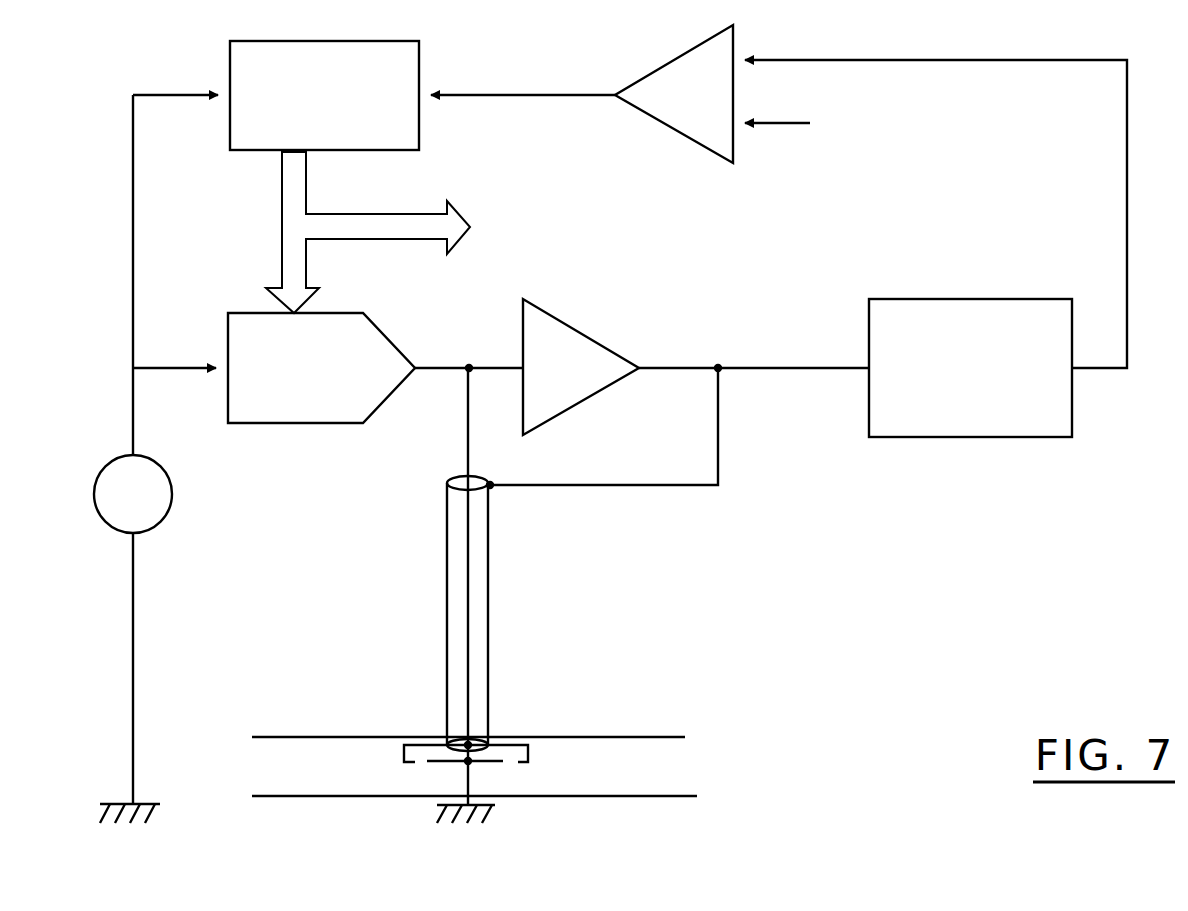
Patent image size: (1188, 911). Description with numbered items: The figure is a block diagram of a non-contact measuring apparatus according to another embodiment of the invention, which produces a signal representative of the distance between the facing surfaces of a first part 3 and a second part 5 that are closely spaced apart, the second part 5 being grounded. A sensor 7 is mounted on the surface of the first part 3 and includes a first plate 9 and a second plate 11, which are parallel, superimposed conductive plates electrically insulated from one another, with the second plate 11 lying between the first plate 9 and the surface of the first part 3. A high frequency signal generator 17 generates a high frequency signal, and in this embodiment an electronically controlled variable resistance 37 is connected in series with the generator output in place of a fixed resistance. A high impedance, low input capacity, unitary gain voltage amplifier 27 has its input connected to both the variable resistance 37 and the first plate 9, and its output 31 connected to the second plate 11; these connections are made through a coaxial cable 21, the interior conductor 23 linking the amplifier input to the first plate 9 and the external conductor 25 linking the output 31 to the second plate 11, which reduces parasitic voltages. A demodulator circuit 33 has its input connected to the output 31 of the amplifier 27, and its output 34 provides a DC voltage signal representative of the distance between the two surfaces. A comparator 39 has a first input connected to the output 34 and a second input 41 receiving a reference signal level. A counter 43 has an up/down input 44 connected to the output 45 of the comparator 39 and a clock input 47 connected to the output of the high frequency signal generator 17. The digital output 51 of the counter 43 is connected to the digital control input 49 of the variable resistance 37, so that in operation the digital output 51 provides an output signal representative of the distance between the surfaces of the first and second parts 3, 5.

The first part 3 is at (280, 737).
The second part 5 is at (348, 796).
The sensor 7 is at (538, 752).
The first plate 9 is at (432, 762).
The second plate 11 is at (418, 737).
The high frequency signal generator 17 is at (172, 490).
The coaxial cable 21 is at (523, 559).
The interior conductor 23 is at (468, 620).
The external conductor 25 is at (490, 538).
The voltage amplifier 27 is at (543, 384).
The output 31 is at (680, 368).
The demodulator circuit 33 is at (933, 384).
The output 34 is at (950, 62).
The electronically controlled variable resistance 37 is at (283, 384).
The comparator 39 is at (675, 110).
The second input 41 is at (790, 123).
The counter 43 is at (305, 110).
The up/down input 44 is at (420, 95).
The output 45 is at (538, 95).
The clock input 47 is at (228, 95).
The digital control input 49 is at (290, 312).
The digital output 51 is at (278, 152).